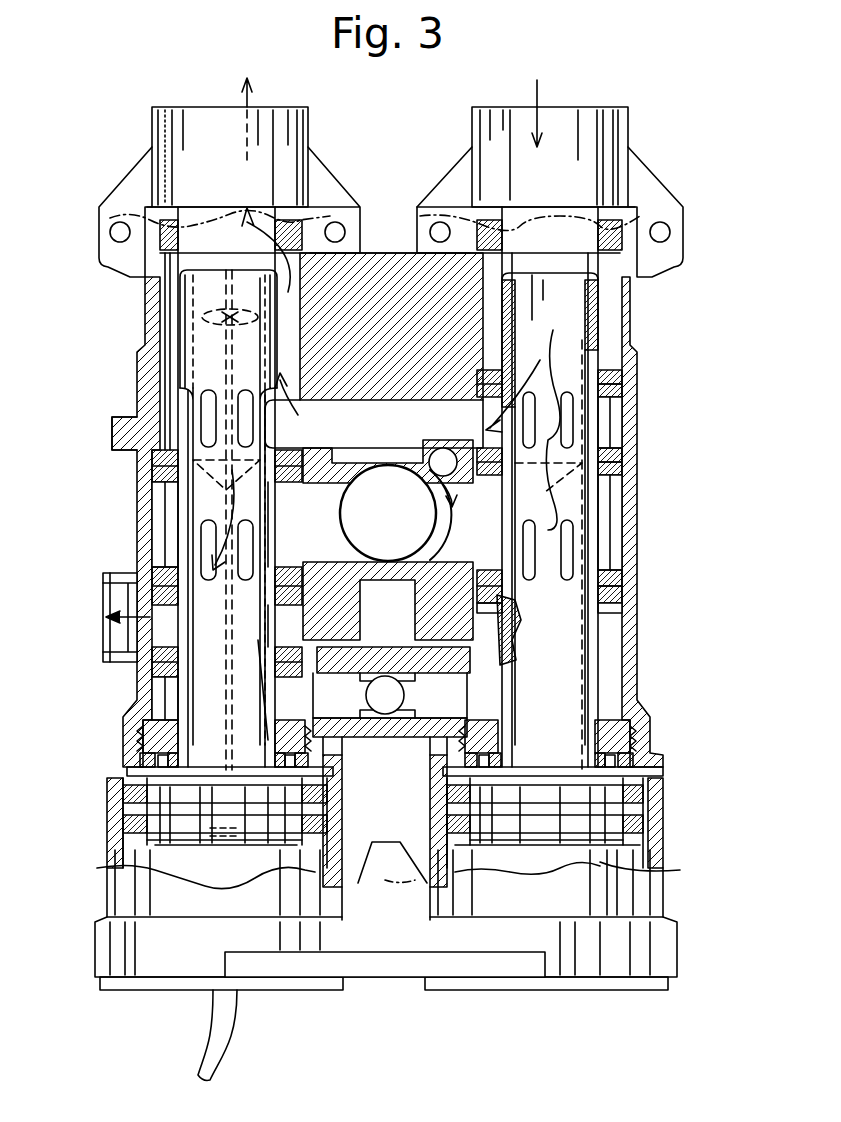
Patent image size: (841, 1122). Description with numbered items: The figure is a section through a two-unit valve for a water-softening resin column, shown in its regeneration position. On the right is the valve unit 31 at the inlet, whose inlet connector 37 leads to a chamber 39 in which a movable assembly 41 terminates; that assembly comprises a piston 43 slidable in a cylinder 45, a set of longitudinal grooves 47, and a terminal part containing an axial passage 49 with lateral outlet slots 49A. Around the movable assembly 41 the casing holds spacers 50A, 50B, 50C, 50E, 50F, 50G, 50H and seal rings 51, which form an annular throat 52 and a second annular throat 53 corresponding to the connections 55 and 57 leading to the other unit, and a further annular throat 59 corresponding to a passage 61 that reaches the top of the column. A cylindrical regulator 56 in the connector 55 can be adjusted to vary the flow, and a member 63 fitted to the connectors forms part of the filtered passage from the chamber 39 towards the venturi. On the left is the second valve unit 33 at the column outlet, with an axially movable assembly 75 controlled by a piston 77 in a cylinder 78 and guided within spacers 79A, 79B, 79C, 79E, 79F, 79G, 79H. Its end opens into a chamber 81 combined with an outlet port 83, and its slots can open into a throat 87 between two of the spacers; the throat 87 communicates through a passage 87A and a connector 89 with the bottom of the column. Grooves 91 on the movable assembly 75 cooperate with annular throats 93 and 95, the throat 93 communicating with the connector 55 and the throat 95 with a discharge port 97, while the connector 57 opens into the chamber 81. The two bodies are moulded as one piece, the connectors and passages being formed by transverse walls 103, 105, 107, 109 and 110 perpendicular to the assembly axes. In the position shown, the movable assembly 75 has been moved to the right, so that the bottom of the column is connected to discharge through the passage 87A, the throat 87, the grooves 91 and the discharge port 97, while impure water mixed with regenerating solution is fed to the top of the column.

The valve unit 31 is at (640, 325).
The second valve unit 33 is at (150, 320).
The inlet connector 37 is at (590, 150).
The chamber 39 is at (580, 230).
The movable assembly 41 is at (560, 744).
The piston 43 is at (490, 830).
The cylinder 45 is at (430, 815).
The longitudinal grooves 47 is at (520, 635).
The axial passage 49 is at (570, 300).
The lateral outlet slots 49A is at (520, 355).
The spacer 50A is at (612, 376).
The spacer 50B is at (612, 392).
The spacer 50C is at (612, 452).
The spacer 50E is at (612, 472).
The spacer 50F is at (612, 578).
The spacer 50G is at (612, 608).
The spacer 50H is at (635, 730).
The seal rings 51 is at (612, 594).
The annular throat 52 is at (505, 695).
The second annular throat 53 is at (615, 418).
The connection 55 is at (352, 704).
The cylindrical regulator 56 is at (405, 694).
The connection 57 is at (400, 429).
The annular throat 59 is at (615, 528).
The passage 61 is at (468, 550).
The member 63 is at (445, 448).
The movable assembly 75 is at (210, 744).
The piston 77 is at (140, 818).
The cylinder 78 is at (190, 879).
The spacer 79A is at (125, 430).
The spacer 79B is at (165, 472).
The spacer 79C is at (165, 560).
The spacer 79E is at (160, 600).
The spacer 79F is at (160, 652).
The spacer 79G is at (160, 690).
The spacer 79H is at (140, 738).
The chamber 81 is at (232, 249).
The outlet port 83 is at (175, 128).
The throat 87 is at (178, 514).
The passage 87A is at (330, 525).
The connector 89 is at (402, 509).
The grooves 91 is at (210, 585).
The annular throat 93 is at (275, 706).
The annular throat 95 is at (272, 640).
The discharge port 97 is at (100, 614).
The transverse wall 103 is at (400, 366).
The transverse wall 105 is at (320, 448).
The transverse wall 107 is at (388, 601).
The transverse wall 109 is at (405, 655).
The transverse wall 110 is at (368, 737).